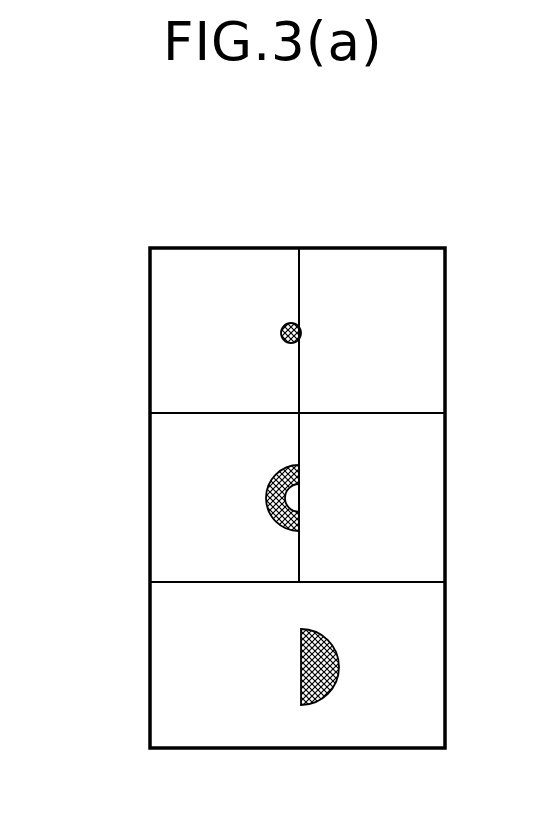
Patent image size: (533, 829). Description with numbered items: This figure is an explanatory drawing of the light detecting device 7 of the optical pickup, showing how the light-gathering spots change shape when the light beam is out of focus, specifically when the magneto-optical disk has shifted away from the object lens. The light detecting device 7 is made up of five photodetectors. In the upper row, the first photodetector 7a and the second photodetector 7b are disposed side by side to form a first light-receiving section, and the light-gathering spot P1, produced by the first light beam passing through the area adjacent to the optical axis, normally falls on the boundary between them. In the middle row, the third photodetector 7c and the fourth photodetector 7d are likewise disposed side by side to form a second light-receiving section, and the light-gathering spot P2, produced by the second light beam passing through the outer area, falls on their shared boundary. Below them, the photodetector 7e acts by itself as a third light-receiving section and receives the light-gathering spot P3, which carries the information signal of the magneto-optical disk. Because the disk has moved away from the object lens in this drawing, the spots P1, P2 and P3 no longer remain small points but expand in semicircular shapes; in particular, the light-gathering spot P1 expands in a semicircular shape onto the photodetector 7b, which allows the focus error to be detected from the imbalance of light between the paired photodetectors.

The light detecting device 7 is at (315, 208).
The first photodetector 7a is at (412, 248).
The second photodetector 7b is at (228, 248).
The third photodetector 7c is at (413, 467).
The fourth photodetector 7d is at (172, 490).
The photodetector 7e is at (401, 740).
The light-gathering spot P1 is at (283, 328).
The light-gathering spot P2 is at (268, 480).
The light-gathering spot P3 is at (337, 658).